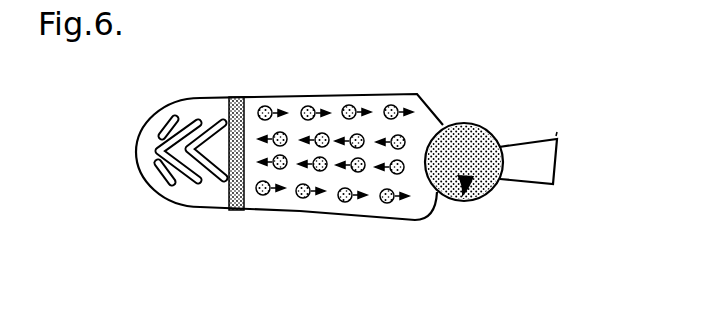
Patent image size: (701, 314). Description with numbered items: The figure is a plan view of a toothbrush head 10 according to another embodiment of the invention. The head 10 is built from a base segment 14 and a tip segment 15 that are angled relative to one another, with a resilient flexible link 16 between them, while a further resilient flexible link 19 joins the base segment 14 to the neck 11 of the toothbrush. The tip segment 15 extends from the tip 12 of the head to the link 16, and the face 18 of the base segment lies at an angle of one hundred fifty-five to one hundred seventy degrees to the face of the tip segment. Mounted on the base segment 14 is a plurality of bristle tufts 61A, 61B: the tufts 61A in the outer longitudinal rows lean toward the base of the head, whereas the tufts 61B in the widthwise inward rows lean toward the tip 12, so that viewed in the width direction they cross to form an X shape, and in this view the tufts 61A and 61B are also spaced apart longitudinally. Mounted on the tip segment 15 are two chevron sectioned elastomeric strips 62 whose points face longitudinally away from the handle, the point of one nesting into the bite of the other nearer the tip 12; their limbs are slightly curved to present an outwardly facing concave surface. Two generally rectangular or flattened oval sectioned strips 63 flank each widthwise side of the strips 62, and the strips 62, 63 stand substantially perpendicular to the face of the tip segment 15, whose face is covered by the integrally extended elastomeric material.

The toothbrush head 10 is at (329, 154).
The neck 11 is at (525, 183).
The tip 12 is at (137, 158).
The base segment 14 is at (327, 216).
The tip segment 15 is at (185, 203).
The resilient flexible link 16 is at (232, 206).
The face of the base segment 18 is at (327, 100).
The resilient flexible link 19 is at (470, 202).
The bristle tufts 61A is at (388, 203).
The bristle tufts 61B is at (403, 147).
The chevron sectioned elastomeric strips 62 is at (193, 123).
The rectangular or flattened oval sectioned strips 63 is at (168, 122).